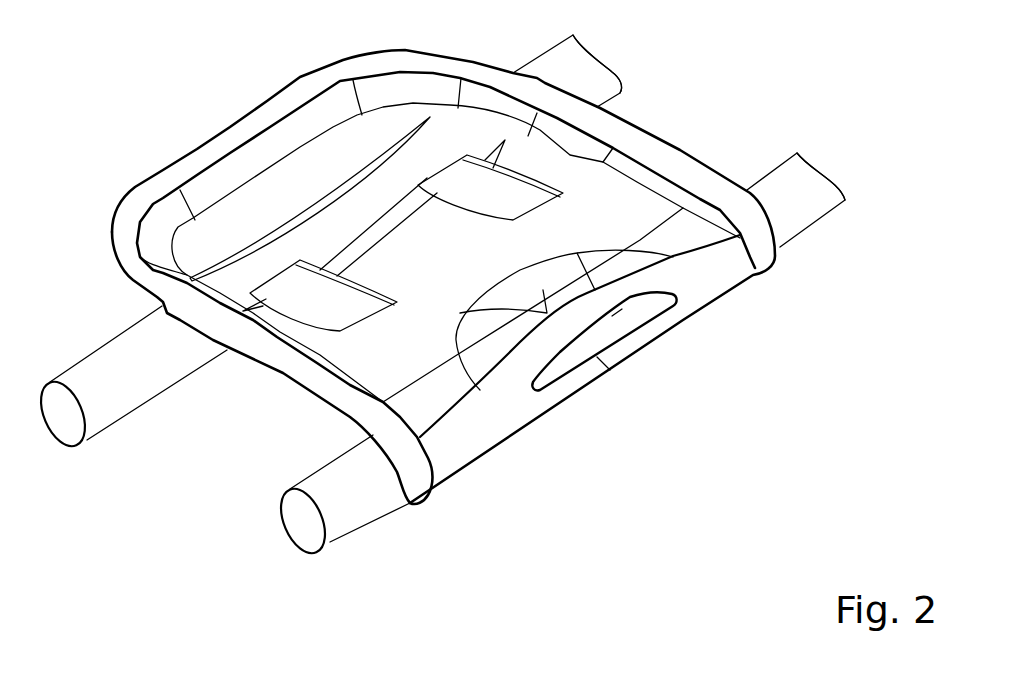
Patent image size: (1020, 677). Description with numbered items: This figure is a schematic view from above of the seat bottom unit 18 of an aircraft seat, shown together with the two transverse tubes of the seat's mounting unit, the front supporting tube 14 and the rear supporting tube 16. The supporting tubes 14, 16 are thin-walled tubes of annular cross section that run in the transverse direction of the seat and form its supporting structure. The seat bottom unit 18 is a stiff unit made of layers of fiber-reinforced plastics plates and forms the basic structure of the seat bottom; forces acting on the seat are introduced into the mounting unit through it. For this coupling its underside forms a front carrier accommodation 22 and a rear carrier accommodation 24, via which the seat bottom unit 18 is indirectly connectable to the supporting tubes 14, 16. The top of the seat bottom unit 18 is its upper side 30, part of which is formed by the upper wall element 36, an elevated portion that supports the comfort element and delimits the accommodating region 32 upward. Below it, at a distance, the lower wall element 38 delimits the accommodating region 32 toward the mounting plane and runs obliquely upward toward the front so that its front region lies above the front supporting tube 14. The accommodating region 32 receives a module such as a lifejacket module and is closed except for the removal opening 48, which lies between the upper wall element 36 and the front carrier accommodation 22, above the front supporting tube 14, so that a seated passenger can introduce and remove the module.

The front supporting tube 14 is at (810, 196).
The rear supporting tube 16 is at (597, 84).
The seat bottom unit 18 is at (193, 247).
The front carrier accommodation 22 is at (757, 201).
The rear carrier accommodation 24 is at (571, 84).
The upper side 30 is at (293, 185).
The accommodating region 32 is at (627, 307).
The upper wall element 36 is at (520, 316).
The lower wall element 38 is at (617, 318).
The removal opening 48 is at (608, 370).